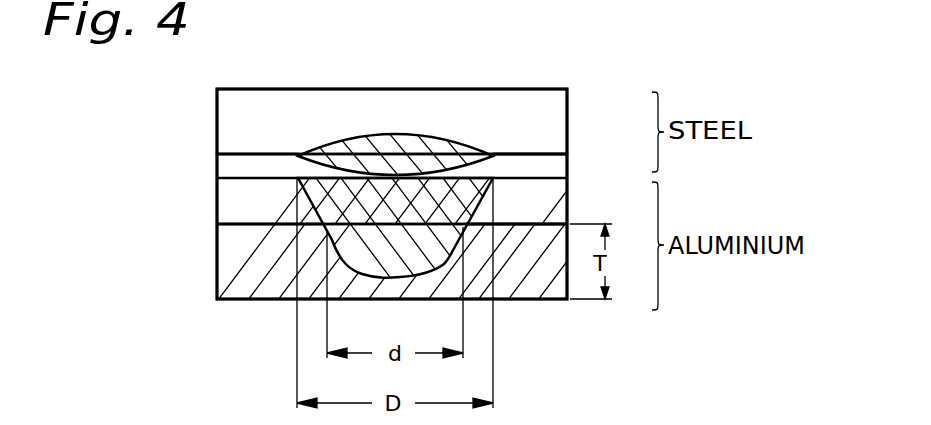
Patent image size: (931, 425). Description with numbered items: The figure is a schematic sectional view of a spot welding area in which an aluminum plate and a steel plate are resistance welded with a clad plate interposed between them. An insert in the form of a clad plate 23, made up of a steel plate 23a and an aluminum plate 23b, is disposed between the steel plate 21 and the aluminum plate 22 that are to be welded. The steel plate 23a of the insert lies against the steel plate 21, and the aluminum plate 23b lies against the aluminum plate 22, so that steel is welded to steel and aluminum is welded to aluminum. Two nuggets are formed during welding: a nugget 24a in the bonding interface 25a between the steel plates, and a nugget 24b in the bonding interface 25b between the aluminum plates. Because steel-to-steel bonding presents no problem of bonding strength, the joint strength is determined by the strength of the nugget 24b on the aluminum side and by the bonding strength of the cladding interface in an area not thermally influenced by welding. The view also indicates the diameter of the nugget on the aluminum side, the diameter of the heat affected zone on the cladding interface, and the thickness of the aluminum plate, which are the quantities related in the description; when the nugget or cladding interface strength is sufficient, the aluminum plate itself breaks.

The steel plate 21 is at (205, 89).
The aluminum plate 22 is at (205, 224).
The clad plate 23 is at (580, 148).
The steel plate 23a is at (232, 163).
The aluminum plate 23b is at (230, 202).
The nugget 24a is at (437, 147).
The nugget 24b is at (437, 258).
The bonding interface 25a is at (525, 153).
The bonding interface 25b is at (524, 228).